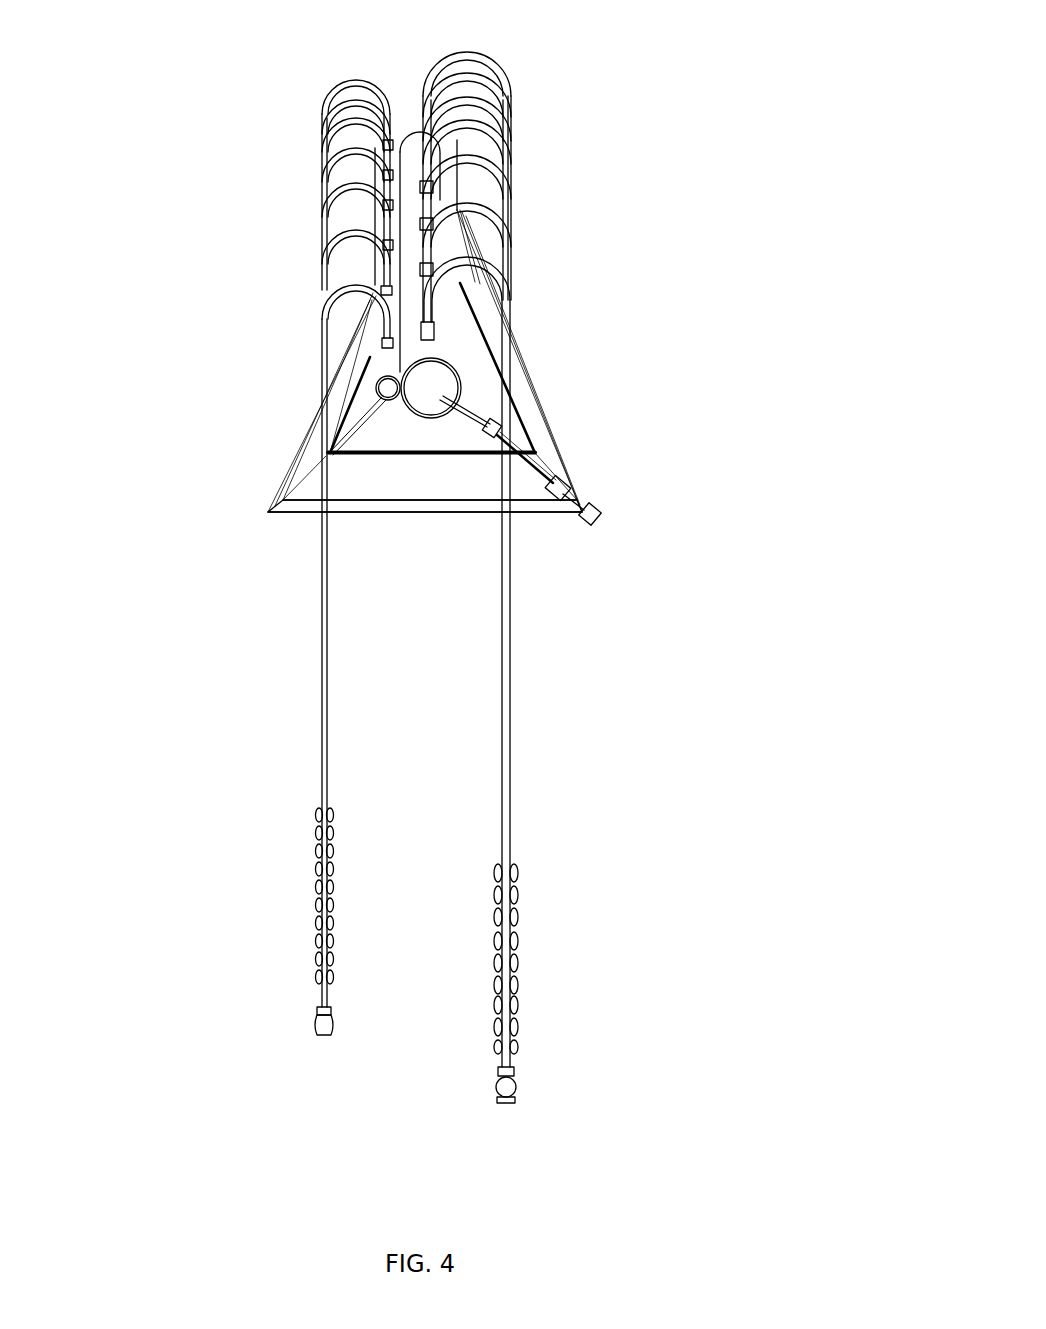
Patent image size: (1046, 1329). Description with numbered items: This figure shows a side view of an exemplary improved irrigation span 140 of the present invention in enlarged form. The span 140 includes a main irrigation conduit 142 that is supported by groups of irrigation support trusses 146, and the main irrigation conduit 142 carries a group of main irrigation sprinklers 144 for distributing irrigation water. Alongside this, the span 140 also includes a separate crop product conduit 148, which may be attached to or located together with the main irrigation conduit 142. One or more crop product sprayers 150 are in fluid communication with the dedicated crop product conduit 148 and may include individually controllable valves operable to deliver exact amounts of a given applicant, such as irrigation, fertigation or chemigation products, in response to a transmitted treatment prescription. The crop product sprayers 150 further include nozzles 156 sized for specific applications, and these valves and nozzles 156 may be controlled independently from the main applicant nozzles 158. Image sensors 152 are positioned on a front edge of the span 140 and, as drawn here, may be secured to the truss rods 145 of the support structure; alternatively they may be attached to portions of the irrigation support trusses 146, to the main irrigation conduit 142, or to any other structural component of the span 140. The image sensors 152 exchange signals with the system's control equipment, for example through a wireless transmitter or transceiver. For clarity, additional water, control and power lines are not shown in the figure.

The span 140 is at (598, 205).
The main irrigation conduit 142 is at (437, 393).
The main irrigation sprinklers 144 is at (482, 68).
The truss rods 145 is at (533, 451).
The irrigation support trusses 146 is at (540, 507).
The crop product conduit 148 is at (373, 393).
The crop product sprayers 150 is at (323, 983).
The image sensors 152 is at (592, 514).
The nozzles 156 is at (320, 1032).
The main applicant nozzles 158 is at (505, 1090).